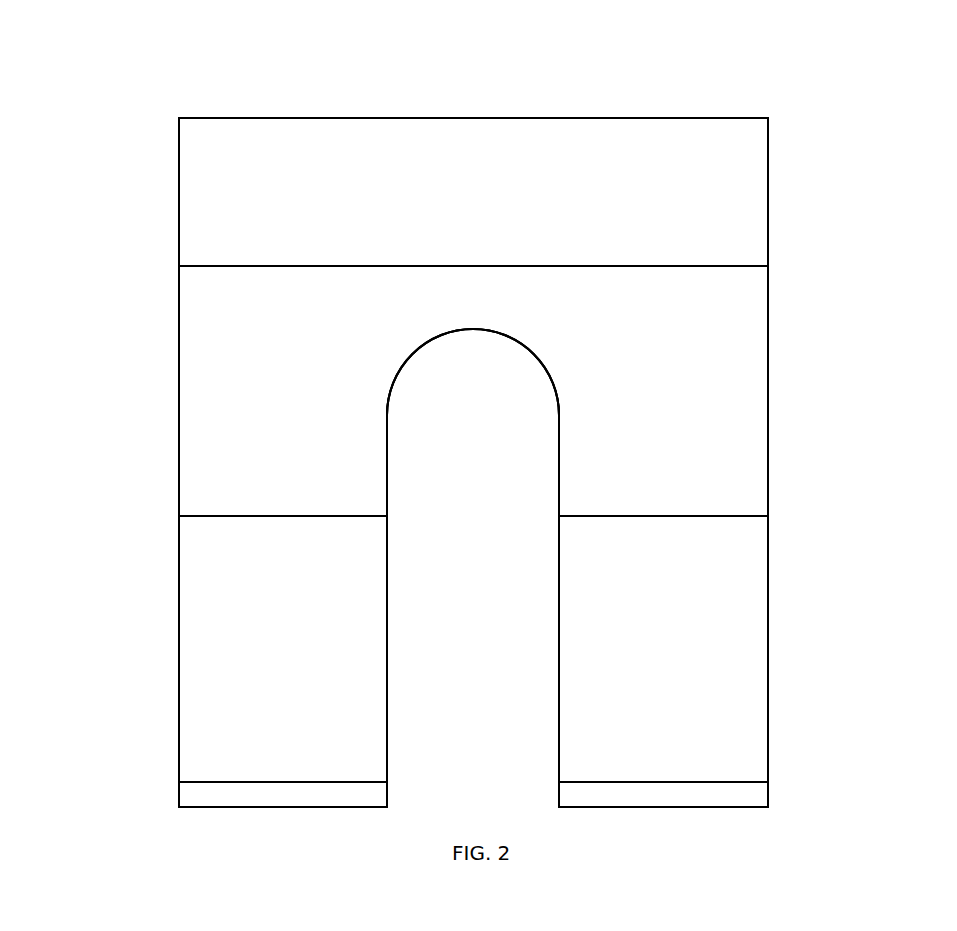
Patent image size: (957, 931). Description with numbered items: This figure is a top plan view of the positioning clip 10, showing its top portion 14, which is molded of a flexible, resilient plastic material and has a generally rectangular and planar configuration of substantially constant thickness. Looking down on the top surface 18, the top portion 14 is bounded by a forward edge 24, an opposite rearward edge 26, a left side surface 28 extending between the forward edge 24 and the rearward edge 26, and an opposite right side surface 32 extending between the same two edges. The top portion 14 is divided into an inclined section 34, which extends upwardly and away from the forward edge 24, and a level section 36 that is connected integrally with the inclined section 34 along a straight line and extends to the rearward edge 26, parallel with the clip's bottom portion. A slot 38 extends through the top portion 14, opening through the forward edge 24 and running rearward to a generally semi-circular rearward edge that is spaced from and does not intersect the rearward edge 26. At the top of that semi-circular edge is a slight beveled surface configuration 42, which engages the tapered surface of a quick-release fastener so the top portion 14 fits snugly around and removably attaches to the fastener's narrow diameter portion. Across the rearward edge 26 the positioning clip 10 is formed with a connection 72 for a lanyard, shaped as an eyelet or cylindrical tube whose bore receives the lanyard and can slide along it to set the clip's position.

The positioning clip 10 is at (804, 124).
The top portion 14 is at (770, 378).
The top surface 18 is at (740, 330).
The forward edge 24 is at (260, 808).
The rearward edge 26 is at (385, 265).
The left side surface 28 is at (179, 543).
The right side surface 32 is at (768, 495).
The inclined section 34 is at (740, 690).
The level section 36 is at (740, 462).
The slot 38 is at (467, 627).
The beveled surface configuration 42 is at (470, 330).
The connection for a lanyard 72 is at (212, 116).